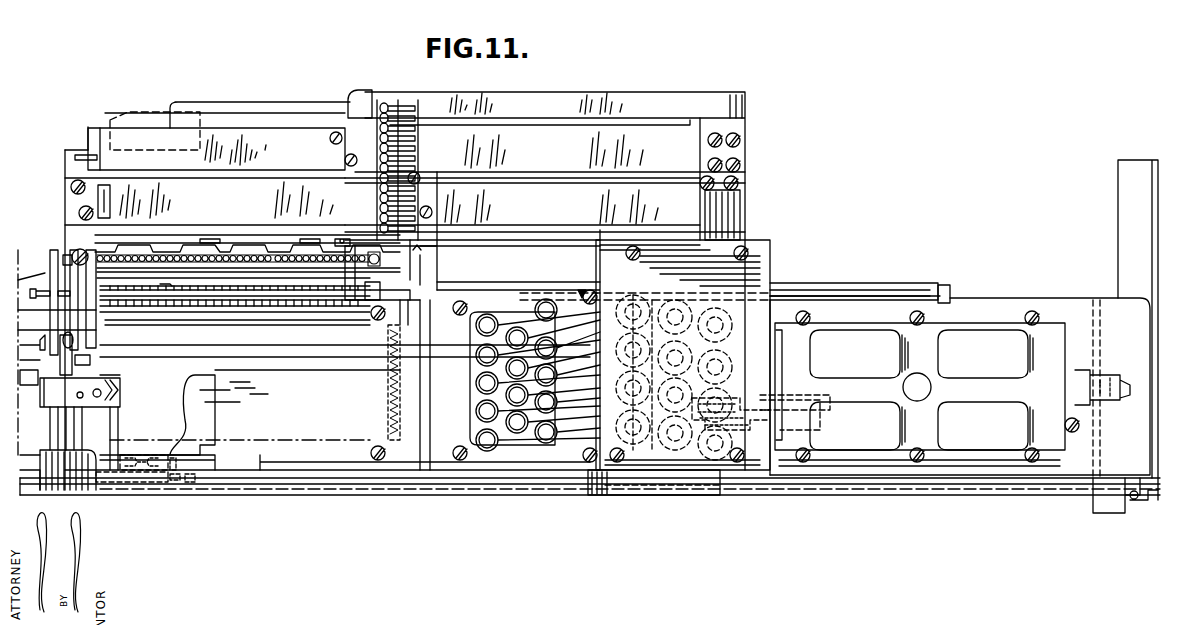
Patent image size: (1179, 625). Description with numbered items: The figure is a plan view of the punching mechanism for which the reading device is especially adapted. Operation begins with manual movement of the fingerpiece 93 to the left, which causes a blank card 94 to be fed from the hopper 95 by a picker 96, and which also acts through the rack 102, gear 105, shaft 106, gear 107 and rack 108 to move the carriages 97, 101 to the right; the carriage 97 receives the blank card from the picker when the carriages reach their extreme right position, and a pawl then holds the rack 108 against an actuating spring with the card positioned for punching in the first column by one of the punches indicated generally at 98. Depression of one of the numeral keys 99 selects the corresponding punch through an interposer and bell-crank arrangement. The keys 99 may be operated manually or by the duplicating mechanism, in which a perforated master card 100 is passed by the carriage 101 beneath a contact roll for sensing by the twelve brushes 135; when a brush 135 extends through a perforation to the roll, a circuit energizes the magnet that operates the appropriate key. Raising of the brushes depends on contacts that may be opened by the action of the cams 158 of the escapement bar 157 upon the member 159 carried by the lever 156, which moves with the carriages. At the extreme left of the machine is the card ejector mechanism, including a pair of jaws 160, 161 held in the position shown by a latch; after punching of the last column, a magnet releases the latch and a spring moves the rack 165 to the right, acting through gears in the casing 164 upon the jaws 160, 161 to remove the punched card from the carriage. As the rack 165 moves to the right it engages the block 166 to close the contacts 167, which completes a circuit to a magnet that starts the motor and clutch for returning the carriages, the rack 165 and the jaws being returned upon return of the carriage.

The fingerpiece 93 is at (1140, 510).
The blank card 94 is at (880, 440).
The hopper 95 is at (935, 325).
The picker 96 is at (1093, 372).
The carriage 97 is at (297, 425).
The punches 98 is at (400, 410).
The numeral keys 99 is at (538, 433).
The perforated master card 100 is at (140, 112).
The carriage 101 is at (248, 133).
The rack 102 is at (793, 491).
The gear 105 is at (622, 489).
The shaft 106 is at (650, 455).
The gear 107 is at (690, 300).
The rack 108 is at (580, 294).
The brushes 135 is at (455, 140).
The lever 156 is at (123, 318).
The escapement bar 157 is at (188, 237).
The cams 158 is at (243, 251).
The member 159 is at (70, 256).
The jaw 160 is at (90, 402).
The jaw 161 is at (122, 396).
The casing 164 is at (90, 490).
The rack 165 is at (145, 488).
The block 166 is at (178, 472).
The contacts 167 is at (172, 458).